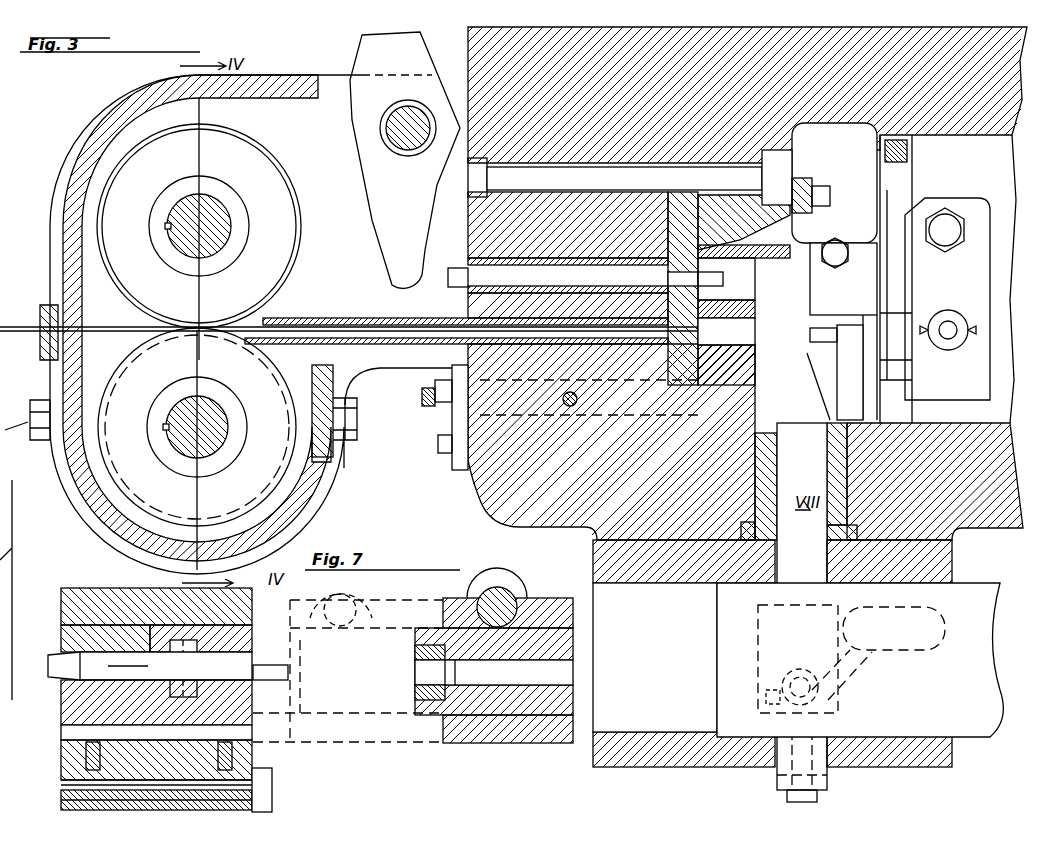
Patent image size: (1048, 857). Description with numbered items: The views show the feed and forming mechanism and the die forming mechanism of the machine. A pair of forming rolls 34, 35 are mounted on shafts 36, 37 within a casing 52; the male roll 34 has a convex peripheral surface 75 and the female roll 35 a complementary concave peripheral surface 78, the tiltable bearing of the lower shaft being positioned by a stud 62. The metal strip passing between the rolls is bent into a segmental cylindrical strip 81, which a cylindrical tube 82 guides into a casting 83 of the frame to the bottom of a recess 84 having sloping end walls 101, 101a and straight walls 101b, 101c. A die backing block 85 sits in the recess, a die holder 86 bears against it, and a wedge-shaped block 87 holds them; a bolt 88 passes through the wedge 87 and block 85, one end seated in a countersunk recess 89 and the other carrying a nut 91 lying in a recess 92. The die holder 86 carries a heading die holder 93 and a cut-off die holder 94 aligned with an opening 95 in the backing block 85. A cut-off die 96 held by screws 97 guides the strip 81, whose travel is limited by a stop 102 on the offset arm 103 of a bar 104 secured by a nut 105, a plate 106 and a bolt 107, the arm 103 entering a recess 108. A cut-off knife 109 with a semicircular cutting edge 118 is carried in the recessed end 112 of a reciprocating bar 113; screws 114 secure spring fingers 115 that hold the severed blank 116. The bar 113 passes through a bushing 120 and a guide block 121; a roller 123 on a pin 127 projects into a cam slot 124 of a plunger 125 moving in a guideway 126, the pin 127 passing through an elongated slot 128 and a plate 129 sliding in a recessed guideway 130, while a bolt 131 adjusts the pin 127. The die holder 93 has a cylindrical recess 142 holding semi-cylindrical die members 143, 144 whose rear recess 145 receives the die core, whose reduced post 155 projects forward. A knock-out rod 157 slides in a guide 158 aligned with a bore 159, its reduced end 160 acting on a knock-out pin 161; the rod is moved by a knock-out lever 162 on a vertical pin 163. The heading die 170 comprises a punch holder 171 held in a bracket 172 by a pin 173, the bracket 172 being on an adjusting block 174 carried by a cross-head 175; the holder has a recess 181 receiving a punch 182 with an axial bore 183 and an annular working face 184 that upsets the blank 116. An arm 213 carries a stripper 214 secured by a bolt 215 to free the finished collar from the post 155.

In FIG. 3, the casing 52 is at (74, 188).
In FIG. 3, the recess 145 is at (160, 536).
In FIG. 3, the forming roll 34 is at (275, 215).
In FIG. 3, the convex peripheral surface 75 is at (302, 240).
In FIG. 3, the shaft 36 is at (210, 220).
In FIG. 3, the forming roll 35 is at (282, 404).
In FIG. 3, the concave peripheral surface 78 is at (130, 356).
In FIG. 3, the shaft 37 is at (215, 420).
In FIG. 3, the stud 62 is at (348, 440).
In FIG. 3, the segmental cylindrical strip 81 is at (252, 325).
In FIG. 7, the segmental cylindrical strip 81 is at (61, 785).
In FIG. 3, the cylindrical tube 82 is at (338, 318).
In FIG. 3, the vertical pin 163 is at (410, 112).
In FIG. 3, the knock-out lever 162 is at (468, 178).
In FIG. 3, the countersunk recess 89 is at (460, 205).
In FIG. 3, the guide 158 is at (448, 268).
In FIG. 3, the knock-out rod 157 is at (448, 278).
In FIG. 7, the knock-out rod 157 is at (288, 630).
In FIG. 3, the casting 83 is at (490, 455).
In FIG. 3, the bolt 88 is at (624, 178).
In FIG. 3, the straight wall 101c is at (662, 168).
In FIG. 3, the recess 92 is at (683, 278).
In FIG. 3, the nut 91 is at (770, 190).
In FIG. 3, the recess 84 is at (568, 275).
In FIG. 3, the die backing block 85 is at (640, 268).
In FIG. 3, the reduced end 160 is at (684, 277).
In FIG. 7, the reduced end 160 is at (58, 650).
In FIG. 3, the knock-out pin 161 is at (714, 277).
In FIG. 7, the knock-out pin 161 is at (50, 675).
In FIG. 3, the heading die holder 93 is at (725, 262).
In FIG. 7, the heading die holder 93 is at (61, 706).
In FIG. 3, the cylindrical recess 142 is at (730, 265).
In FIG. 7, the cylindrical recess 142 is at (150, 700).
In FIG. 3, the cylindrical bore 159 is at (735, 282).
In FIG. 3, the cut-off die holder 94 is at (768, 328).
In FIG. 7, the cut-off die holder 94 is at (70, 748).
In FIG. 3, the opening 95 is at (690, 338).
In FIG. 3, the die holder 86 is at (735, 375).
In FIG. 7, the die holder 86 is at (61, 600).
In FIG. 3, the straight wall 101b is at (665, 365).
In FIG. 3, the sloping end wall 101 is at (755, 380).
In FIG. 3, the reciprocally mounted bar 113 is at (802, 612).
In FIG. 3, the bushing 120 is at (840, 480).
In FIG. 3, the cut-off knife 109 is at (830, 420).
In FIG. 7, the cut-off knife 109 is at (272, 806).
In FIG. 3, the guide block 121 is at (840, 755).
In FIG. 3, the guideway 126 is at (660, 725).
In FIG. 3, the plunger 125 is at (985, 572).
In FIG. 3, the recessed guideway 130 is at (768, 618).
In FIG. 3, the elongated slot 128 is at (800, 668).
In FIG. 3, the plate 129 is at (792, 668).
In FIG. 3, the roller 123 is at (890, 650).
In FIG. 3, the cam slot 124 is at (900, 670).
In FIG. 3, the pin 127 is at (776, 697).
In FIG. 3, the bolt 131 is at (790, 800).
In FIG. 3, the sloping end wall 101a is at (790, 142).
In FIG. 3, the wedge-shaped block 87 is at (795, 166).
In FIG. 3, the arm 213 is at (850, 158).
In FIG. 3, the bolt 215 is at (830, 192).
In FIG. 3, the stripper 214 is at (815, 200).
In FIG. 3, the heading die 170 is at (870, 240).
In FIG. 7, the heading die 170 is at (505, 598).
In FIG. 3, the punch holder 171 is at (843, 276).
In FIG. 7, the punch holder 171 is at (505, 700).
In FIG. 3, the bracket 172 is at (850, 256).
In FIG. 7, the bracket 172 is at (560, 625).
In FIG. 3, the pin 173 is at (855, 262).
In FIG. 7, the pin 173 is at (520, 570).
In FIG. 3, the adjusting block 174 is at (940, 275).
In FIG. 3, the cross-head 175 is at (958, 172).
In FIG. 3, the stop 102 is at (865, 318).
In FIG. 3, the recess 108 is at (878, 400).
In FIG. 3, the spring fingers 115 is at (815, 342).
In FIG. 7, the spring fingers 115 is at (272, 782).
In FIG. 3, the offset arm 103 is at (853, 370).
In FIG. 3, the recessed end 112 is at (820, 386).
In FIG. 3, the screws 114 is at (828, 412).
In FIG. 3, the bar 104 is at (460, 362).
In FIG. 3, the nut 105 is at (435, 385).
In FIG. 3, the plate 106 is at (430, 405).
In FIG. 3, the bolt 107 is at (438, 440).
In FIG. 7, the semi-cylindrical die member 143 is at (240, 640).
In FIG. 7, the screws 97 is at (61, 732).
In FIG. 7, the cut-off die 96 is at (253, 776).
In FIG. 7, the post 155 is at (290, 665).
In FIG. 7, the blank 116 is at (288, 670).
In FIG. 7, the semi-cylindrical die member 144 is at (292, 698).
In FIG. 7, the cutting edge 118 is at (272, 796).
In FIG. 7, the punch 182 is at (415, 652).
In FIG. 7, the axially extending bore 183 is at (415, 672).
In FIG. 7, the working face 184 is at (415, 692).
In FIG. 7, the recess 181 is at (440, 705).